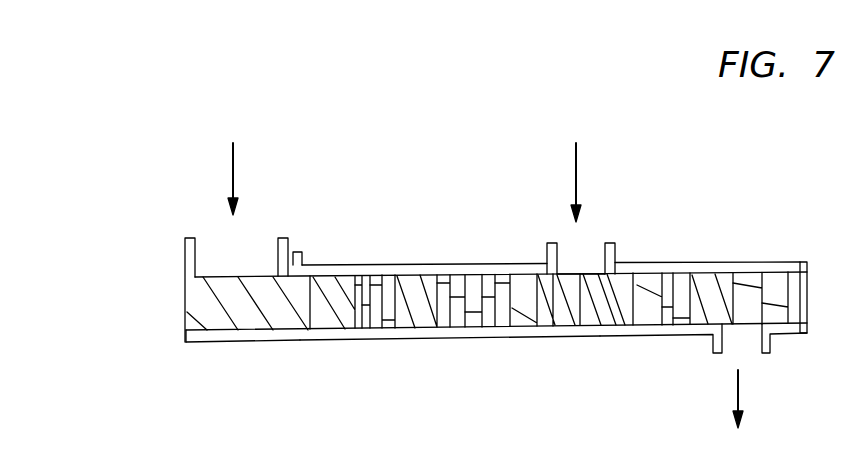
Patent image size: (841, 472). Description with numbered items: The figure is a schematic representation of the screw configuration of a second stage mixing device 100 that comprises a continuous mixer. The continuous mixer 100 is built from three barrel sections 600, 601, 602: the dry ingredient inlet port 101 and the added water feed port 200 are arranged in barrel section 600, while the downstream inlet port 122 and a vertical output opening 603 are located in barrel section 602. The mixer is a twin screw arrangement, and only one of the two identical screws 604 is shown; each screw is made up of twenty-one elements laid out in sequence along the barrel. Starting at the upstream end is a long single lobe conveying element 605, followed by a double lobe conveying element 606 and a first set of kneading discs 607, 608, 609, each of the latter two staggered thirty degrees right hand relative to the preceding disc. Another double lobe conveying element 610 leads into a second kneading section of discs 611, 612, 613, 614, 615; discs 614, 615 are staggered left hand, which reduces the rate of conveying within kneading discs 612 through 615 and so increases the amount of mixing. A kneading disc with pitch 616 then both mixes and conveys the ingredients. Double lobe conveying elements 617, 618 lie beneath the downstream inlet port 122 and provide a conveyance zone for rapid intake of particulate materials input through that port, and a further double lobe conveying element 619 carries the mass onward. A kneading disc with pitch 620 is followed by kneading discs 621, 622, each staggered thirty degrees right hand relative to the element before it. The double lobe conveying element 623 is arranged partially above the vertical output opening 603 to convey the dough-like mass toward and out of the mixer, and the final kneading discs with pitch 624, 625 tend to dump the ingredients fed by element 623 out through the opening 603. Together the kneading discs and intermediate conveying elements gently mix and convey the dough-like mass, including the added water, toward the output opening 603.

The second stage mixing device 100 is at (803, 187).
The dry ingredient inlet port 101 is at (209, 246).
The downstream inlet port 122 is at (590, 248).
The added water feed port 200 is at (298, 255).
The barrel section 600 is at (208, 342).
The barrel section 601 is at (407, 340).
The barrel section 602 is at (700, 335).
The vertical output opening 603 is at (747, 340).
The screw 604 is at (170, 320).
The single lobe conveying element 605 is at (287, 335).
The double lobe conveying element 606 is at (335, 320).
The kneading disc 607 is at (358, 277).
The kneading disc 608 is at (373, 277).
The kneading disc 609 is at (393, 277).
The double lobe conveying element 610 is at (429, 333).
The kneading disc 611 is at (447, 277).
The kneading disc 612 is at (467, 336).
The kneading disc 613 is at (477, 277).
The kneading disc 614 is at (493, 335).
The kneading disc 615 is at (503, 277).
The kneading disc with pitch 616 is at (524, 327).
The double lobe conveying element 617 is at (543, 277).
The double lobe conveying element 618 is at (595, 330).
The double lobe conveying element 619 is at (627, 275).
The kneading disc with pitch 620 is at (637, 333).
The kneading disc 621 is at (668, 323).
The kneading disc 622 is at (683, 275).
The double lobe conveying element 623 is at (721, 275).
The kneading disc with pitch 624 is at (747, 275).
The kneading disc with pitch 625 is at (778, 275).